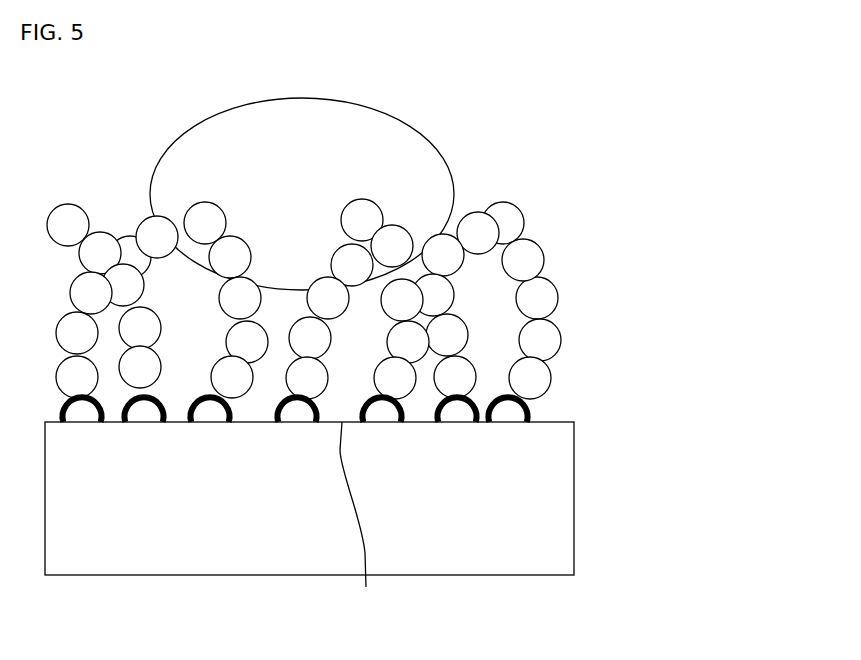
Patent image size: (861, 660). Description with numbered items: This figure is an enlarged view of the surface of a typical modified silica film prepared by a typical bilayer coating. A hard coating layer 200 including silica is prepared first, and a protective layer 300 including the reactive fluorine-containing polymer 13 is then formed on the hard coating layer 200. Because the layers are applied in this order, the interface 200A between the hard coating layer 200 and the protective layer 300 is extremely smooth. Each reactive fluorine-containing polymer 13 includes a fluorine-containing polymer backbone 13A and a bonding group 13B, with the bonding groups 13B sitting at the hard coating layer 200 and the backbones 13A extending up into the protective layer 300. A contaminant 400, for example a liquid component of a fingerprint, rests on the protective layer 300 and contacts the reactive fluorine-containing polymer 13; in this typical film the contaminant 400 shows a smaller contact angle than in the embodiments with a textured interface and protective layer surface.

The contaminant 400 is at (441, 153).
The protective layer 300 is at (432, 310).
The reactive fluorine-containing polymer 13 is at (577, 315).
The fluorine-containing polymer backbone 13A is at (535, 259).
The bonding group 13B is at (515, 412).
The hard coating layer 200 is at (540, 512).
The interface 200A is at (367, 522).